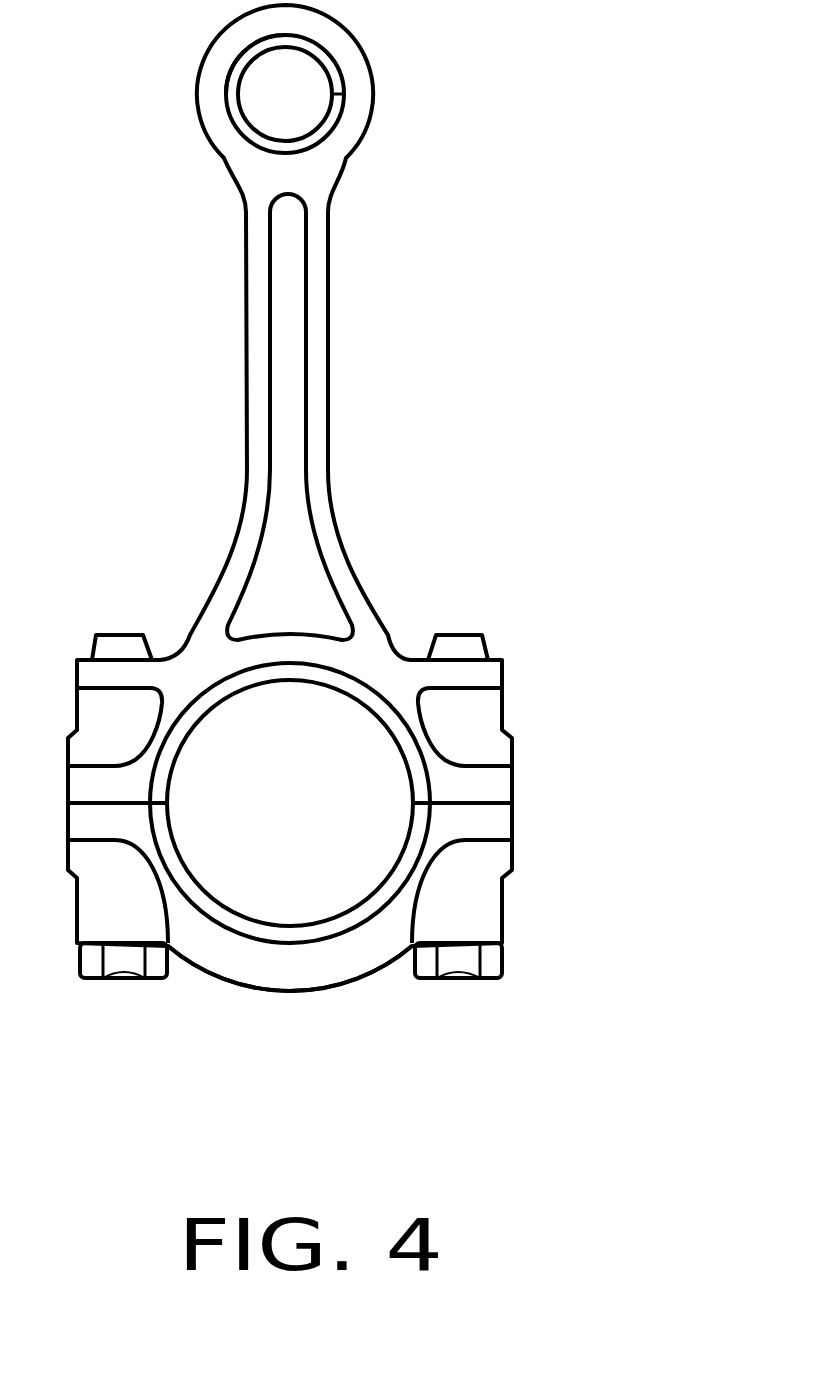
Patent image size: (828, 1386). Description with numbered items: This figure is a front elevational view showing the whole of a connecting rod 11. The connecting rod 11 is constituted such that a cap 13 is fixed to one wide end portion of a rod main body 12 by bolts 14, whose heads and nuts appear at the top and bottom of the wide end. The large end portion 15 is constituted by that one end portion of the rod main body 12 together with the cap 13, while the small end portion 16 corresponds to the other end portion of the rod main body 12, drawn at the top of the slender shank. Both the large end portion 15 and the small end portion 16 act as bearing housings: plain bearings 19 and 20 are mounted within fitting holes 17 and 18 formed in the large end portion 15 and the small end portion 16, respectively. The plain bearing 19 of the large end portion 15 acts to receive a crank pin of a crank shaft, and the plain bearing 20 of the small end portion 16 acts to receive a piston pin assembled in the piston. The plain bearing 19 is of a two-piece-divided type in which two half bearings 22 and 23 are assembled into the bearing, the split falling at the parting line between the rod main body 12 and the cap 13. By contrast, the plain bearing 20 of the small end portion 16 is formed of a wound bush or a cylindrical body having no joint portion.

The connecting rod 11 is at (347, 372).
The rod main body 12 is at (353, 558).
The cap 13 is at (298, 997).
The bolts 14 is at (463, 978).
The large end portion 15 is at (543, 737).
The small end portion 16 is at (410, 145).
The fitting hole 17 is at (202, 897).
The fitting hole 18 is at (300, 38).
The plain bearing 19 is at (363, 677).
The plain bearing 20 is at (227, 118).
The half bearing 22 is at (215, 687).
The half bearing 23 is at (350, 930).